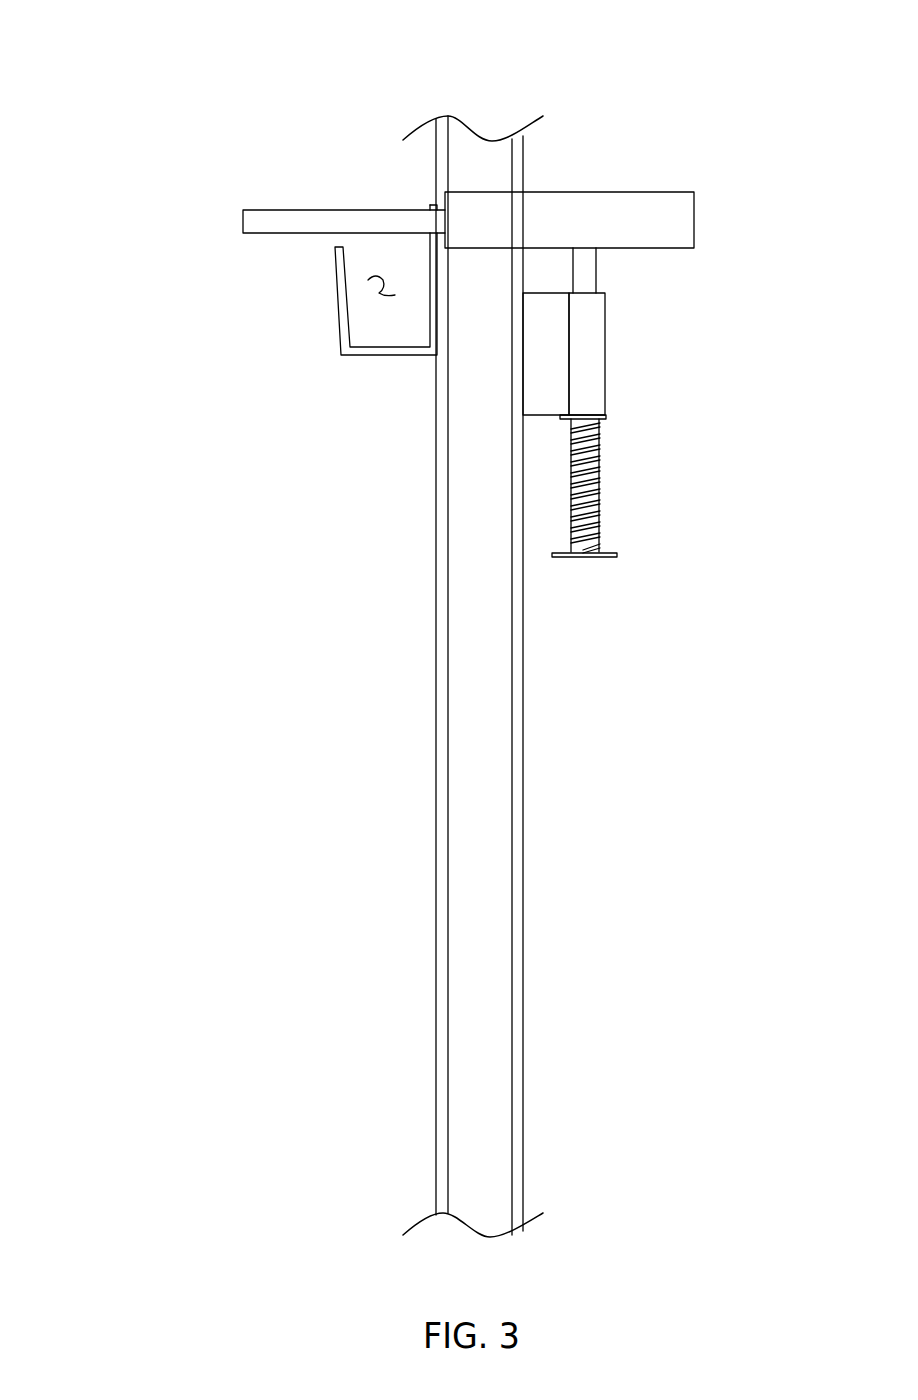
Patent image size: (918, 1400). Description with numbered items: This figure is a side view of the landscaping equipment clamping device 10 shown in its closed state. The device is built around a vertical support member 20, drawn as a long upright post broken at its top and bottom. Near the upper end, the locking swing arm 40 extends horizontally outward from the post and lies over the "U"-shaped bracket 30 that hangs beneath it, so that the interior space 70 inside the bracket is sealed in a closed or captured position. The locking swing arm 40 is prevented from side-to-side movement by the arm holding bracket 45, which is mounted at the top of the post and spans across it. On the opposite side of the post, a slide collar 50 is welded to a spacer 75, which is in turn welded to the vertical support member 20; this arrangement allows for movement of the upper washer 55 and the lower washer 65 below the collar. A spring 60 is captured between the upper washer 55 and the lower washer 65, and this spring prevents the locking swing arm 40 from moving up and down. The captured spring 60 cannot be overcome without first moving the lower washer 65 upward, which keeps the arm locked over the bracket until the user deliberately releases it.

The landscaping equipment clamping device 10 is at (100, 184).
The vertical support member 20 is at (488, 697).
The "U"-shaped bracket 30 is at (347, 348).
The locking swing arm 40 is at (320, 222).
The arm holding bracket 45 is at (623, 226).
The slide collar 50 is at (598, 327).
The upper washer 55 is at (606, 418).
The spring 60 is at (600, 478).
The lower washer 65 is at (617, 555).
The interior space 70 is at (377, 287).
The spacer 75 is at (537, 370).